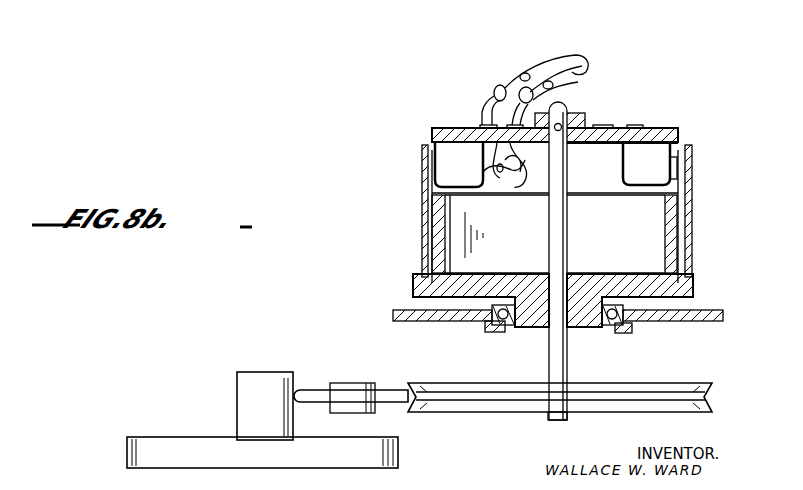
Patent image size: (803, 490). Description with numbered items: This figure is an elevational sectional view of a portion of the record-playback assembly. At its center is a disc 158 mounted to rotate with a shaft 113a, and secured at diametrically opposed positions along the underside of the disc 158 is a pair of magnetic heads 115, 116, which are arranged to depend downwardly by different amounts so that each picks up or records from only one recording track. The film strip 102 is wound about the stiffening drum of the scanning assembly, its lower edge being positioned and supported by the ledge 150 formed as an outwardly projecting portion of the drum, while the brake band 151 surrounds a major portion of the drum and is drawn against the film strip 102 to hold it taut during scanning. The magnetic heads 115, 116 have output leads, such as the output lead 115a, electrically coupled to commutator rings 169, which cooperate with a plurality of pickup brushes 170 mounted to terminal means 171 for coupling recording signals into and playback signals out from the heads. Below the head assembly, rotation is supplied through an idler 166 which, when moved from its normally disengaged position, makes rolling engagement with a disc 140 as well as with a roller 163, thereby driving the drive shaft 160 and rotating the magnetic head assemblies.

The film strip 102 is at (431, 142).
The shaft 113a is at (568, 363).
The magnetic head 115 is at (452, 155).
The output lead 115a is at (514, 164).
The magnetic head 116 is at (641, 158).
The disc 140 is at (462, 384).
The ledge 150 is at (436, 230).
The brake band 151 is at (692, 223).
The disc 158 is at (584, 144).
The drive shaft 160 is at (127, 452).
The roller 163 is at (237, 406).
The idler 166 is at (313, 390).
The commutator rings 169 is at (631, 125).
The pickup brushes 170 is at (485, 90).
The terminal means 171 is at (558, 64).